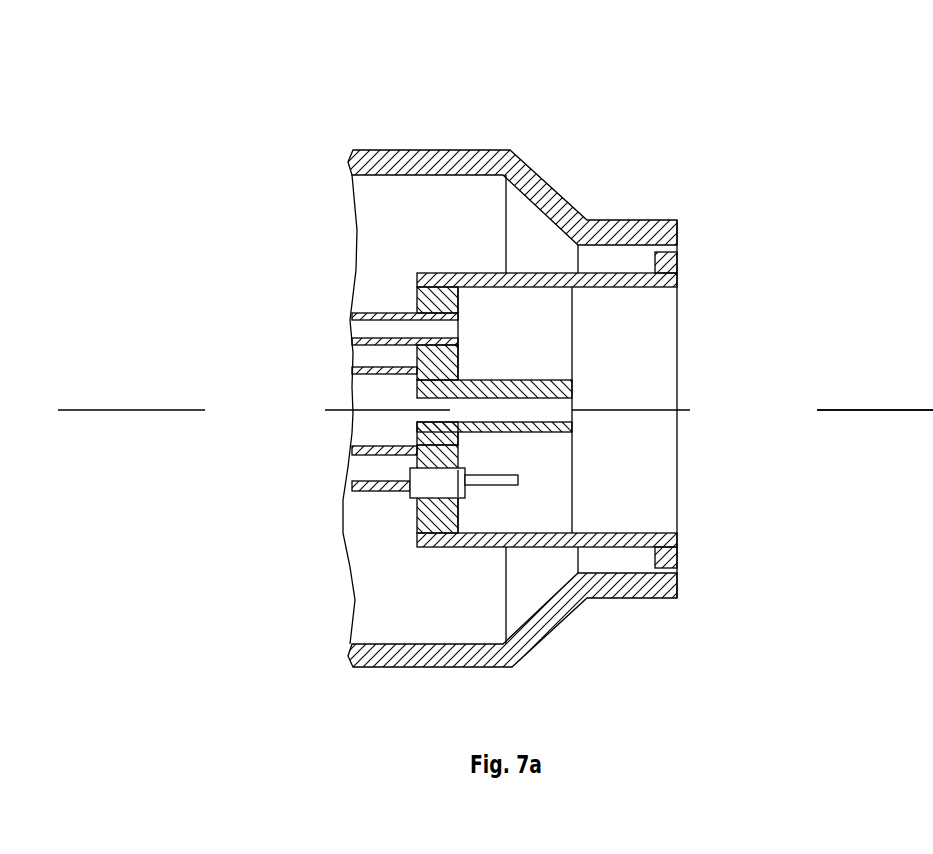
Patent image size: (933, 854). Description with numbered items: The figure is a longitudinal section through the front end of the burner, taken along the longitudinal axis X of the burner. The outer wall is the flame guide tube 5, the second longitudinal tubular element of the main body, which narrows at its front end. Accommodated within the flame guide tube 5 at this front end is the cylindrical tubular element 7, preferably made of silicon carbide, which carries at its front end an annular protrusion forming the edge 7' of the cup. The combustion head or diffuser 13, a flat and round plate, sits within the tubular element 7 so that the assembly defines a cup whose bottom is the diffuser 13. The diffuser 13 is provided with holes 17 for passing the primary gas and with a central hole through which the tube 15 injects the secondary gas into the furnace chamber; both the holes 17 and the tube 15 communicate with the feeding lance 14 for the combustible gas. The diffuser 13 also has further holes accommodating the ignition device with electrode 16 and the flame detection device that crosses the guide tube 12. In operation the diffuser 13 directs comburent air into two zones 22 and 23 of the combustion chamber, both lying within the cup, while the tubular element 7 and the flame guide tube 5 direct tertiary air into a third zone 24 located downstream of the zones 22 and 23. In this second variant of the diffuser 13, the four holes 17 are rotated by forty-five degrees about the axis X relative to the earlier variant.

The flame guide tube 5 is at (447, 163).
The cylindrical tubular element 7 is at (547, 391).
The edge of the cup 7' is at (725, 423).
The guide tube 12 is at (377, 313).
The combustion head or diffuser 13 is at (413, 425).
The feeding lance 14 is at (354, 458).
The tube for injecting secondary gas 15 is at (548, 390).
The electrode of the ignition device 16 is at (382, 491).
The holes 17 is at (413, 379).
The first zone of the combustion chamber 22 is at (514, 353).
The second zone of the combustion chamber 23 is at (609, 438).
The third zone of the combustion chamber 24 is at (751, 436).
The longitudinal axis X is at (877, 412).